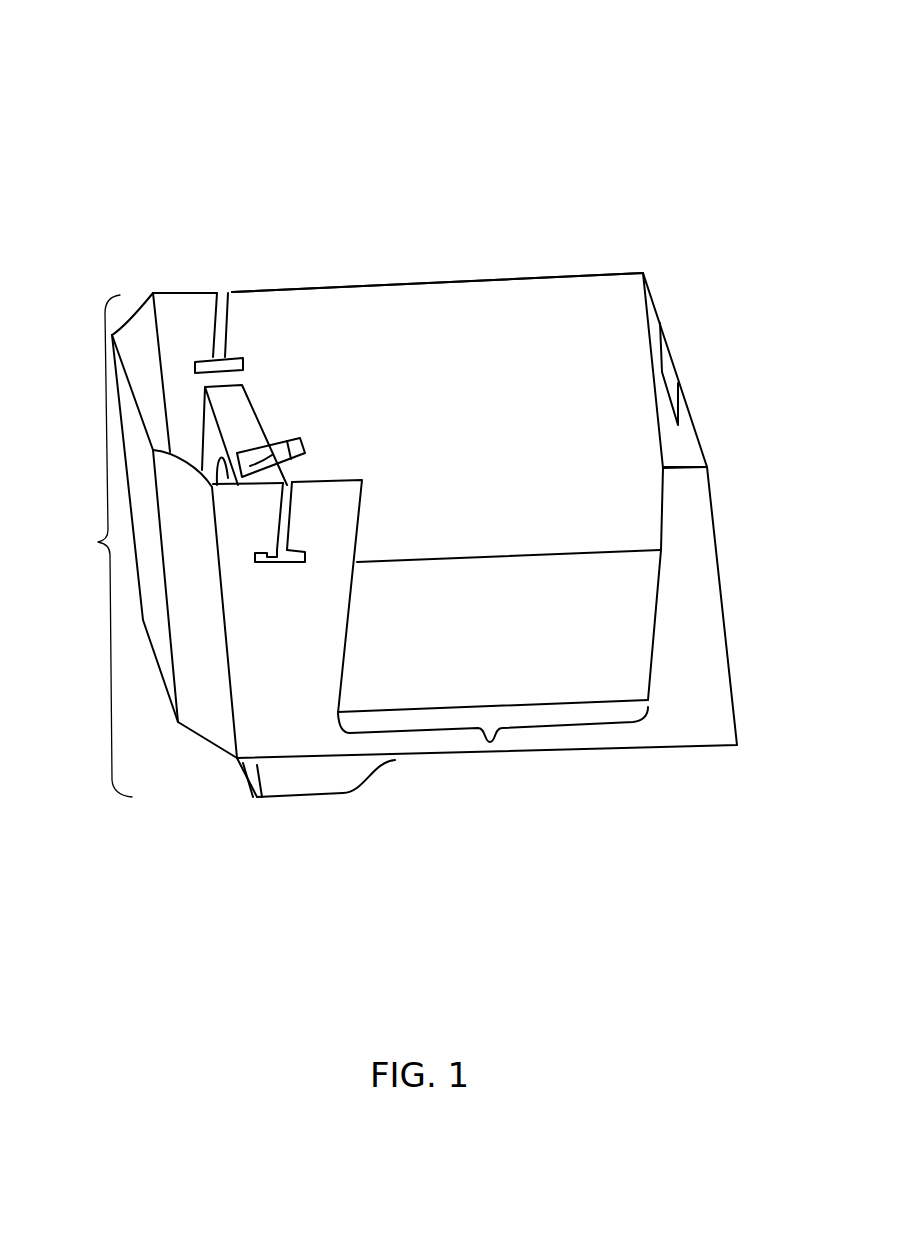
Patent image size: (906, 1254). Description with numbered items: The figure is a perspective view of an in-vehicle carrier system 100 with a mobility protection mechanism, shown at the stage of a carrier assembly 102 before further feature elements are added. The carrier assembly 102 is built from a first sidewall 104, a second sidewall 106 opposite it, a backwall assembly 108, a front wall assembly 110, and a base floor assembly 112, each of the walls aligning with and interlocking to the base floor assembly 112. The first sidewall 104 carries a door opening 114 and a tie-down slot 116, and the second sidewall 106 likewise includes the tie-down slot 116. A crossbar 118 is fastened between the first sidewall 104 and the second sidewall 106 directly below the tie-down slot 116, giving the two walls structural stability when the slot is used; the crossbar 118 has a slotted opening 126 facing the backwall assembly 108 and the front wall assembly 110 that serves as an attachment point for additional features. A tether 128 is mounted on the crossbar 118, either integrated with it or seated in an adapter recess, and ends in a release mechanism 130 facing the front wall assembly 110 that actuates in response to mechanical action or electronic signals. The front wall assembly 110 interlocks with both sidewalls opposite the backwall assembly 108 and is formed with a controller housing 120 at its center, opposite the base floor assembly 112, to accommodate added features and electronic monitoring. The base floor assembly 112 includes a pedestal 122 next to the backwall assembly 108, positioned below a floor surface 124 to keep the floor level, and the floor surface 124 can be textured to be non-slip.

The in-vehicle carrier system 100 is at (188, 65).
The carrier assembly 102 is at (98, 542).
The first sidewall 104 is at (675, 584).
The second sidewall 106 is at (437, 310).
The backwall assembly 108 is at (257, 604).
The front wall assembly 110 is at (687, 448).
The base floor assembly 112 is at (499, 631).
The door opening 114 is at (490, 742).
The tie-down slot 116 is at (256, 556).
The crossbar 118 is at (226, 411).
The controller housing 120 is at (670, 375).
The pedestal 122 is at (280, 778).
The floor surface 124 is at (588, 636).
The slotted opening 126 is at (206, 458).
The tether 128 is at (290, 436).
The release mechanism 130 is at (303, 450).